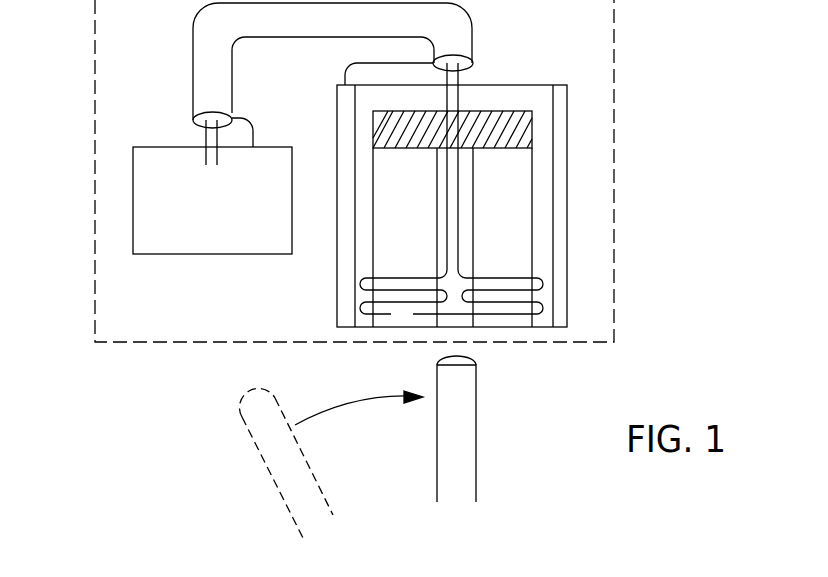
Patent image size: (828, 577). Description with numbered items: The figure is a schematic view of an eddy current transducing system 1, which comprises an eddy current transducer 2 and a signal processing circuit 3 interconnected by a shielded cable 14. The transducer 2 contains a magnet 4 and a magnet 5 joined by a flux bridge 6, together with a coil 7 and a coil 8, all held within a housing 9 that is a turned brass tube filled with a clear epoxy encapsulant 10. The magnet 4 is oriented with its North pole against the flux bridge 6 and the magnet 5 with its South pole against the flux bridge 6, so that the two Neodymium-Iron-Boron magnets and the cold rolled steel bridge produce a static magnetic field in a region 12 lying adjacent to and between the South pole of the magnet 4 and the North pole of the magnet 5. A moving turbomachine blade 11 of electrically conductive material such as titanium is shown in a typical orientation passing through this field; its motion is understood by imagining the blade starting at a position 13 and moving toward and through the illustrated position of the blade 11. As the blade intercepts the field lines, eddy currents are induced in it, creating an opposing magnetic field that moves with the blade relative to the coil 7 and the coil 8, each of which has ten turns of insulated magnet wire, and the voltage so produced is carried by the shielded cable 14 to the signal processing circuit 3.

The system 1 is at (105, 33).
The eddy current transducer 2 is at (490, 93).
The signal processing circuit 3 is at (140, 189).
The magnet 4 is at (527, 185).
The magnet 5 is at (385, 198).
The flux bridge 6 is at (527, 133).
The coil 7 is at (545, 285).
The coil 8 is at (444, 296).
The housing 9 is at (346, 242).
The encapsulant 10 is at (548, 258).
The turbomachine blade 11 is at (462, 428).
The region 12 is at (466, 348).
The position 13 is at (273, 465).
The shielded cable 14 is at (198, 100).